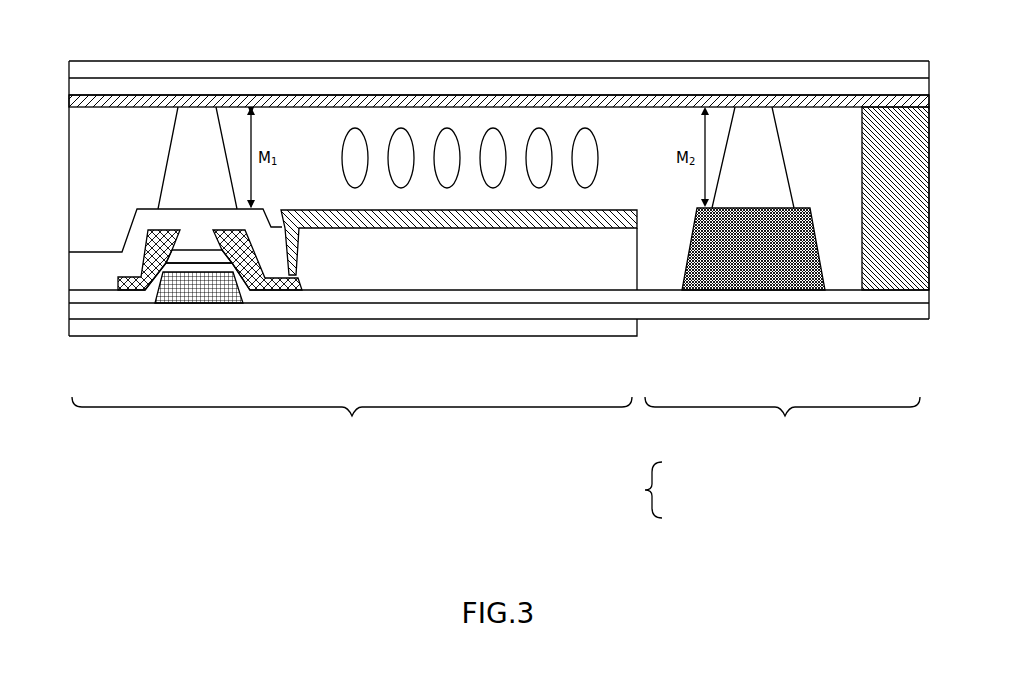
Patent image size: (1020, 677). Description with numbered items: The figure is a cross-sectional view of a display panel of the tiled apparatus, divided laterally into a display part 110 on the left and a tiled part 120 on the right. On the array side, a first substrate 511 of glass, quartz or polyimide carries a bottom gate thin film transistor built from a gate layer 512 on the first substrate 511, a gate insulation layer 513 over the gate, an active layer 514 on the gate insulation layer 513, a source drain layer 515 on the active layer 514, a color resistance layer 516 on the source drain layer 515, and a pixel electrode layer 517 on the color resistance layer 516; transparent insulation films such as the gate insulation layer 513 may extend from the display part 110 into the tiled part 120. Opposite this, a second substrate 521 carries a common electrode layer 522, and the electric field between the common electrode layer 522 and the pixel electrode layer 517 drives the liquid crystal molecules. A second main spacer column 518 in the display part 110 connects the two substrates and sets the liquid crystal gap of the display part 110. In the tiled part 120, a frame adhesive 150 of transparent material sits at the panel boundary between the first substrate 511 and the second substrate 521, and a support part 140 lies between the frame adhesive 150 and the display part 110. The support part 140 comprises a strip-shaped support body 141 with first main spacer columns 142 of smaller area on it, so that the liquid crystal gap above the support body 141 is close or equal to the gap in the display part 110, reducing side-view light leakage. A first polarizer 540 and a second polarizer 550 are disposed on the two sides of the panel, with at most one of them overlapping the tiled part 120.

The display part 110 is at (352, 419).
The tiled part 120 is at (782, 420).
The support part 140 is at (654, 491).
The support body 141 is at (757, 285).
The first main spacer column 142 is at (752, 120).
The frame adhesive 150 is at (887, 278).
The first substrate 511 is at (673, 312).
The gate layer 512 is at (167, 304).
The gate insulation layer 513 is at (431, 293).
The active layer 514 is at (212, 255).
The source drain layer 515 is at (242, 258).
The color resistance layer 516 is at (520, 262).
The pixel electrode layer 517 is at (346, 220).
The second main spacer column 518 is at (197, 145).
The second substrate 521 is at (384, 87).
The common electrode layer 522 is at (293, 103).
The first polarizer 540 is at (585, 330).
The second polarizer 550 is at (540, 70).